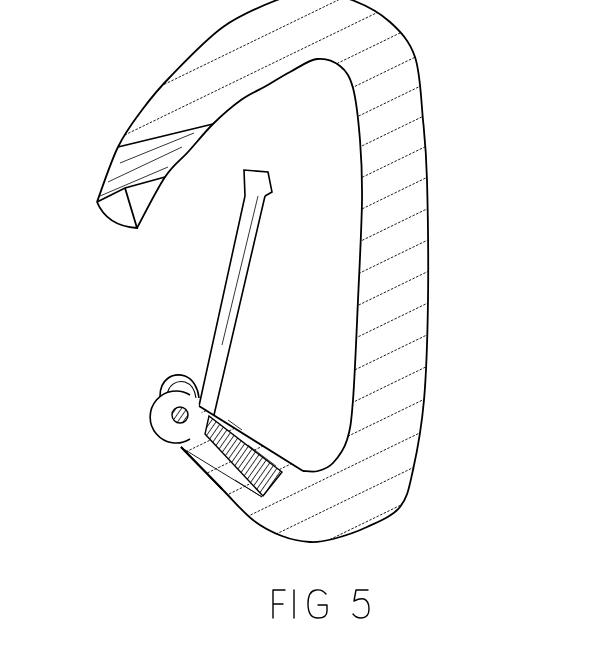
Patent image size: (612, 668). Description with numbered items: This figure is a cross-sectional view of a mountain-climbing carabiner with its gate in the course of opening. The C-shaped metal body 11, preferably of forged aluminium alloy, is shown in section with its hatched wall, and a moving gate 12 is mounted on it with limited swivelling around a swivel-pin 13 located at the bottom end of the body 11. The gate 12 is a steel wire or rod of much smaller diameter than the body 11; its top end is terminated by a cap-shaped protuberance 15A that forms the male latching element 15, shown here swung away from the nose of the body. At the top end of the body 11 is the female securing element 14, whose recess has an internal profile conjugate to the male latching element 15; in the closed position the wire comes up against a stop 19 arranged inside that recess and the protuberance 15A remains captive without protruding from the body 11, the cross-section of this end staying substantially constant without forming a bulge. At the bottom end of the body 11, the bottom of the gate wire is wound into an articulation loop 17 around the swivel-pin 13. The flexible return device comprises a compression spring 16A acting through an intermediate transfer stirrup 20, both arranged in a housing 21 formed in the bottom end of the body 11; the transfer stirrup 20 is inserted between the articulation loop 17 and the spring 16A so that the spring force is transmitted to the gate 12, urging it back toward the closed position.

The body 11 is at (417, 298).
The gate 12 is at (215, 361).
The swivel-pin 13 is at (161, 391).
The female securing element 14 is at (127, 170).
The male latching element 15 is at (280, 198).
The protuberance 15A is at (260, 177).
The compression spring 16A is at (257, 430).
The articulation loop 17 is at (165, 418).
The stop 19 is at (122, 207).
The intermediate transfer stirrup 20 is at (226, 421).
The housing 21 is at (258, 484).